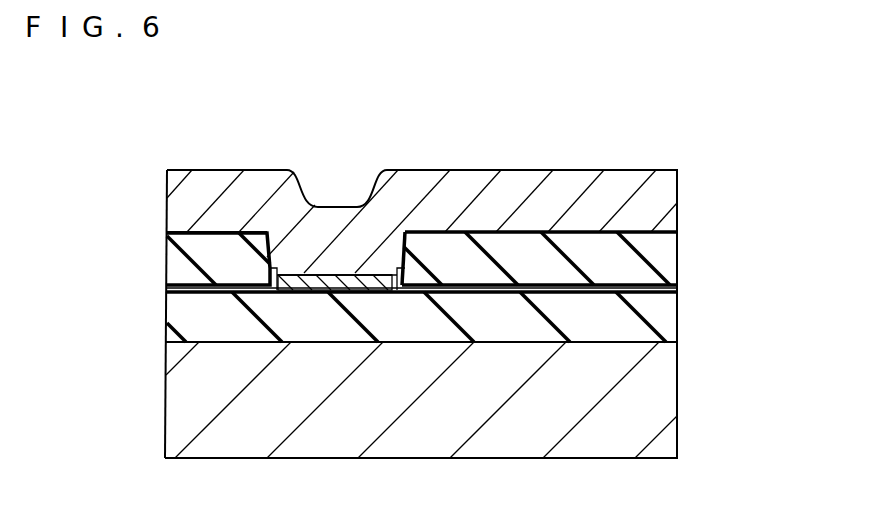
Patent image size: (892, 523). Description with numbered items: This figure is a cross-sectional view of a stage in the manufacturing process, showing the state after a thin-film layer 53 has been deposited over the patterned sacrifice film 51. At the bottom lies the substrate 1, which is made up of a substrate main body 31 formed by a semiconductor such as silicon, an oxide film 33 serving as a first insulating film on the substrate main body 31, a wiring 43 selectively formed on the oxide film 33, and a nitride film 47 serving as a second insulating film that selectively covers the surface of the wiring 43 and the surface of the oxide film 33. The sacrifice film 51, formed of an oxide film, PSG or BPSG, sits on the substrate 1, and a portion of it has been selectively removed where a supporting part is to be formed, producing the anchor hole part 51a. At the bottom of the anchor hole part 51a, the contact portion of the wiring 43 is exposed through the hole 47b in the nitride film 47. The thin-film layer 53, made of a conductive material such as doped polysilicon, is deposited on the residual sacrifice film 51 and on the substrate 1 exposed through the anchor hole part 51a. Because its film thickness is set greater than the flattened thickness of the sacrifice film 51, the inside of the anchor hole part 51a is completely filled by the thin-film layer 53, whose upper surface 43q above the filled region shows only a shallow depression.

The substrate 1 is at (166, 391).
The substrate main body 31 is at (678, 392).
The oxide film 33 is at (678, 315).
The wiring 43 is at (306, 274).
The upper surface of contact plug 43q is at (361, 274).
The nitride film 47 is at (678, 285).
The hole 47b is at (282, 272).
The sacrifice film 51 is at (167, 265).
The anchor hole part 51a is at (397, 268).
The thin-film layer 53 is at (167, 207).